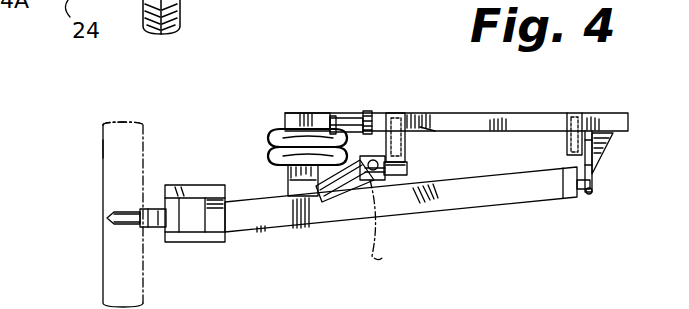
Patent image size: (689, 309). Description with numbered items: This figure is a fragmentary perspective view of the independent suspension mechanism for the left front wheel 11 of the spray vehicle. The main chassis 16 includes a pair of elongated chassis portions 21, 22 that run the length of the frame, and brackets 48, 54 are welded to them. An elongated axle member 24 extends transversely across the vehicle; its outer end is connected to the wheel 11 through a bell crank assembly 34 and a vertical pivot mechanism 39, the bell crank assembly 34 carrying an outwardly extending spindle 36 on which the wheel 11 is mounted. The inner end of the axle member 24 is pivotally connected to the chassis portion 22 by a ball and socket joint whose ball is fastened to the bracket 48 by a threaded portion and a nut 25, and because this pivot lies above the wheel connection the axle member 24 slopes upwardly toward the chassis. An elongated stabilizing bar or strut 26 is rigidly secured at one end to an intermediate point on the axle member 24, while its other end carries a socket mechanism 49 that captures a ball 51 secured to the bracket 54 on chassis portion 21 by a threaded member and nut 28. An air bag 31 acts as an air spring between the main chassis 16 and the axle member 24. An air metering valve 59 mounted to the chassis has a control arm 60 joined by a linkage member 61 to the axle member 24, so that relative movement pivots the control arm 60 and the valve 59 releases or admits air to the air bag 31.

The left front wheel 11 is at (118, 146).
The spindle 36 is at (124, 190).
The bell crank assembly 34 is at (162, 210).
The vertical pivot mechanism 39 is at (175, 232).
The axle member 24 is at (393, 205).
The nut 28 is at (396, 168).
The stabilizing bar or strut 26 is at (337, 183).
The air bag 31 is at (272, 134).
The linkage member 61 is at (318, 113).
The control arm 60 is at (346, 118).
The air metering valve 59 is at (370, 112).
The bracket 54 is at (386, 156).
The socket mechanism 49 is at (362, 174).
The ball 51 is at (376, 258).
The main chassis 16 is at (539, 124).
The chassis portion 21 is at (423, 128).
The chassis portion 22 is at (580, 118).
The nut 25 is at (591, 193).
The bracket 48 is at (598, 170).